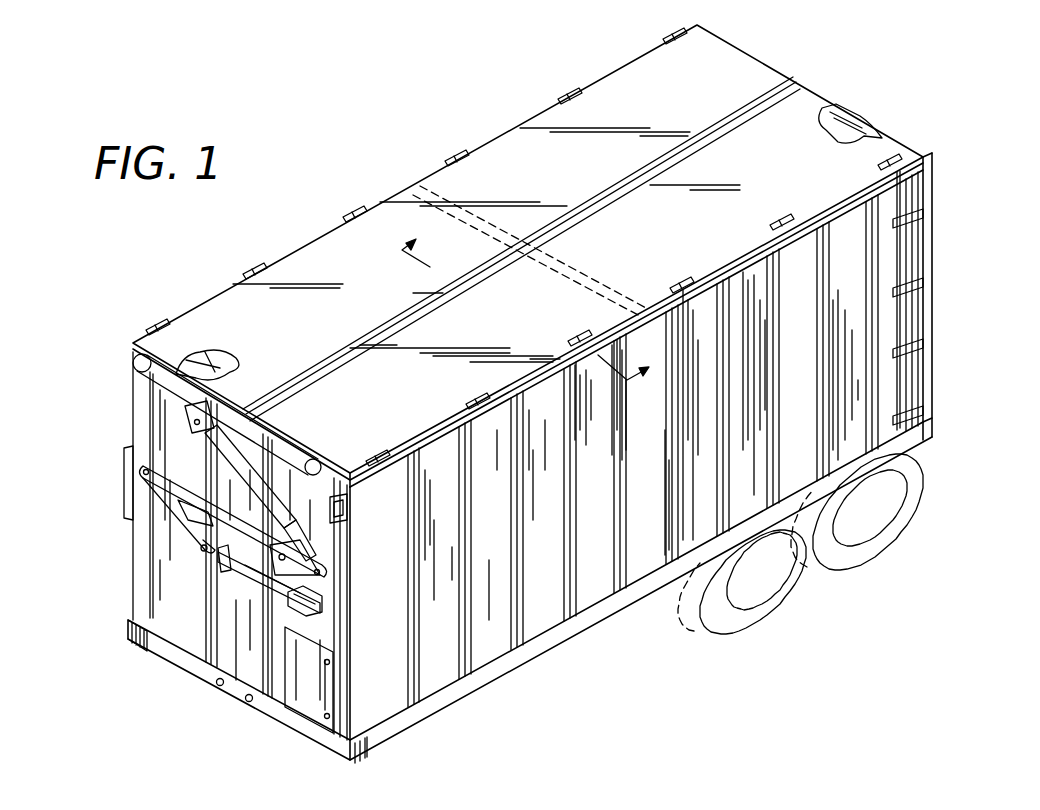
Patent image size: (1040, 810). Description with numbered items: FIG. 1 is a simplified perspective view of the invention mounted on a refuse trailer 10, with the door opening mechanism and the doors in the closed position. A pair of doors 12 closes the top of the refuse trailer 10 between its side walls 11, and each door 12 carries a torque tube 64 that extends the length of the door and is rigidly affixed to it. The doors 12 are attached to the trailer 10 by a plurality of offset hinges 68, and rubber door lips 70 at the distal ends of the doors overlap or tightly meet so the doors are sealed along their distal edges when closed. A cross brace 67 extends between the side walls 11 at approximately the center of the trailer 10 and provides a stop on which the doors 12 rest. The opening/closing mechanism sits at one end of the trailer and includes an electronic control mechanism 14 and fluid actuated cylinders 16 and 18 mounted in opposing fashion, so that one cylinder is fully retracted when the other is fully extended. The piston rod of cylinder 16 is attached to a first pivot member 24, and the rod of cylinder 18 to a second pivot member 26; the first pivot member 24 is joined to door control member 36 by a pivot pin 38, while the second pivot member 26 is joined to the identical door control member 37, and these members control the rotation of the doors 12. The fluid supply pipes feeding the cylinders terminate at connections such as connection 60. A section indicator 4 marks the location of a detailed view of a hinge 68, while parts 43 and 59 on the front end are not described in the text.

The refuse trailer 10 is at (948, 325).
The side walls 11 is at (654, 468).
The doors 12 is at (743, 58).
The electronic control mechanism 14 is at (310, 695).
The fluid actuated cylinder 16 is at (247, 582).
The fluid actuated cylinder 18 is at (247, 467).
The first pivot member 24 is at (163, 502).
The second pivot member 26 is at (308, 588).
The door control member 36 is at (140, 424).
The door control member 37 is at (318, 533).
The pivot pin 38 is at (126, 487).
The tarp hook 43 is at (216, 351).
The bolt 59 is at (217, 684).
The connection 60 is at (248, 702).
The torque tube 64 is at (134, 354).
The cross brace 67 is at (573, 266).
The hinges 68 is at (168, 324).
The rubber door lips 70 is at (795, 78).
The section line 4 is at (526, 299).